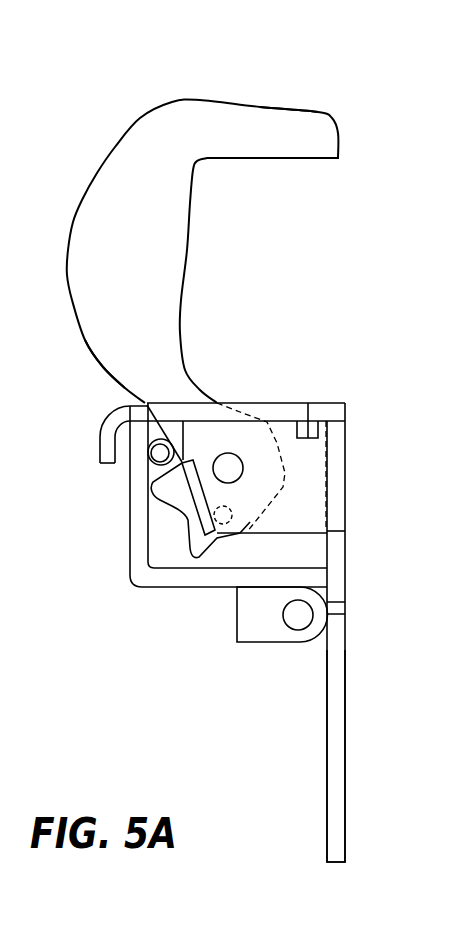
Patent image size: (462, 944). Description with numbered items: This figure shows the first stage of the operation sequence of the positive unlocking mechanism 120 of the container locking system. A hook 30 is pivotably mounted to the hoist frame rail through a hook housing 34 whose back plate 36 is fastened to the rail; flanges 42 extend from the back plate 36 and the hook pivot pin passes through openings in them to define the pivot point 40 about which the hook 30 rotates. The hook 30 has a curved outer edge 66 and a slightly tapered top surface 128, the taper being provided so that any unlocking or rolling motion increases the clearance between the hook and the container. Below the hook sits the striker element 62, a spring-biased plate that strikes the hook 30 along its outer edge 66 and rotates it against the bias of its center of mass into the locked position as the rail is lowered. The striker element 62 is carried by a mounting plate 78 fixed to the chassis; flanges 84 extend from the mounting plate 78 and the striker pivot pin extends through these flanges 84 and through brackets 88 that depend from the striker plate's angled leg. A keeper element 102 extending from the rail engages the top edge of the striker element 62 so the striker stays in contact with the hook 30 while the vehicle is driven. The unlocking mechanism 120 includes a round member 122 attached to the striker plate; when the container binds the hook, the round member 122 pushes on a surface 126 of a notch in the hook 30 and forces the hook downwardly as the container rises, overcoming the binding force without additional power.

The hook 30 is at (118, 157).
The top surface 128 is at (263, 105).
The outer edge 66 is at (102, 367).
The keeper element 102 is at (105, 443).
The positive unlocking mechanism 120 is at (102, 475).
The round member 122 is at (157, 455).
The surface of the notch 126 is at (148, 478).
The striker element 62 is at (138, 593).
The hook housing 34 is at (342, 435).
The pivot point 40 is at (228, 468).
The back plate 36 is at (337, 493).
The flanges 42 is at (298, 513).
The brackets 88 is at (295, 617).
The flanges 84 is at (322, 637).
The mounting plate 78 is at (338, 790).